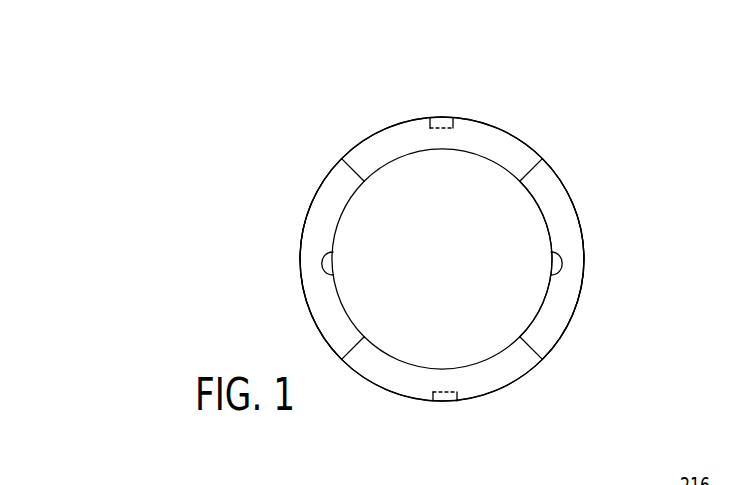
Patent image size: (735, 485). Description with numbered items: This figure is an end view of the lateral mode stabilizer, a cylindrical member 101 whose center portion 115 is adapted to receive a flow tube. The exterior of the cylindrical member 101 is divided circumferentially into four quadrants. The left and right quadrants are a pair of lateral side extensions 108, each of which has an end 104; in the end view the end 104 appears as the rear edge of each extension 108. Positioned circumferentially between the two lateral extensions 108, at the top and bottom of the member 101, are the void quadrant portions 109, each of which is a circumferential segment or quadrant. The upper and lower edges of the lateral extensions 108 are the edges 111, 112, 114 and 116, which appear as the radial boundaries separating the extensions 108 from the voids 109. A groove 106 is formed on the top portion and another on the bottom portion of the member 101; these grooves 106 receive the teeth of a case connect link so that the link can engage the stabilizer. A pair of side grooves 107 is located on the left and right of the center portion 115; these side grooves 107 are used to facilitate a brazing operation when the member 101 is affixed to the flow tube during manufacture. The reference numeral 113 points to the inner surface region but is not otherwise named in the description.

The cylindrical member 101 is at (583, 205).
The end 104 is at (573, 252).
The groove 106 is at (445, 122).
The side groove 107 is at (336, 262).
The lateral side extension 108 is at (308, 260).
The void quadrant portion 109 is at (410, 138).
The edge of lateral extension 111 is at (350, 350).
The edge of lateral extension 112 is at (341, 162).
The inner surface 113 is at (482, 150).
The edge of lateral extension 114 is at (528, 163).
The center portion 115 is at (512, 298).
The edge of lateral extension 116 is at (542, 358).